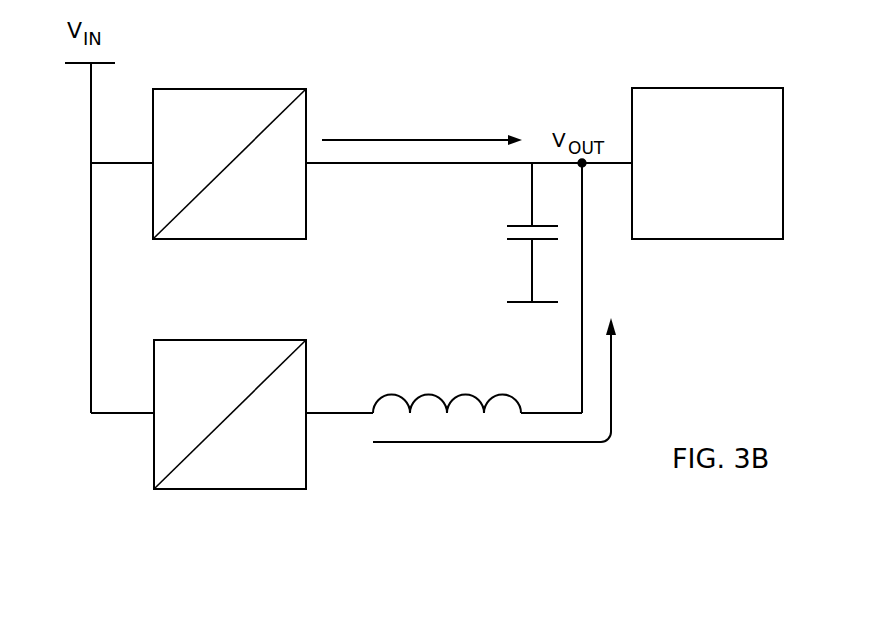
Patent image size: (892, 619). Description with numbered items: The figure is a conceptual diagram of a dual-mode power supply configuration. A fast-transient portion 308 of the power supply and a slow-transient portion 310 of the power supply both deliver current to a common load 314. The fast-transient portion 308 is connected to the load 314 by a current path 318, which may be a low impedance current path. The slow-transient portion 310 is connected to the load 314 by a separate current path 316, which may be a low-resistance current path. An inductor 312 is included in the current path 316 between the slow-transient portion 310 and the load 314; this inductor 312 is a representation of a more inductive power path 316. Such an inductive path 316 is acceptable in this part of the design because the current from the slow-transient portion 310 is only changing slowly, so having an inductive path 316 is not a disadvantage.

The fast-transient portion 308 is at (306, 89).
The slow-transient portion 310 is at (306, 340).
The inductor 312 is at (432, 395).
The load 314 is at (680, 88).
The current path 316 is at (613, 362).
The current path 318 is at (350, 138).